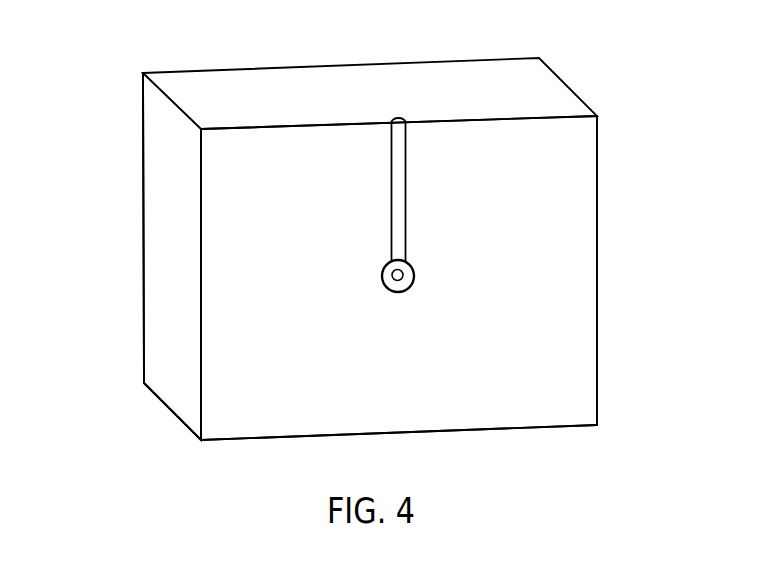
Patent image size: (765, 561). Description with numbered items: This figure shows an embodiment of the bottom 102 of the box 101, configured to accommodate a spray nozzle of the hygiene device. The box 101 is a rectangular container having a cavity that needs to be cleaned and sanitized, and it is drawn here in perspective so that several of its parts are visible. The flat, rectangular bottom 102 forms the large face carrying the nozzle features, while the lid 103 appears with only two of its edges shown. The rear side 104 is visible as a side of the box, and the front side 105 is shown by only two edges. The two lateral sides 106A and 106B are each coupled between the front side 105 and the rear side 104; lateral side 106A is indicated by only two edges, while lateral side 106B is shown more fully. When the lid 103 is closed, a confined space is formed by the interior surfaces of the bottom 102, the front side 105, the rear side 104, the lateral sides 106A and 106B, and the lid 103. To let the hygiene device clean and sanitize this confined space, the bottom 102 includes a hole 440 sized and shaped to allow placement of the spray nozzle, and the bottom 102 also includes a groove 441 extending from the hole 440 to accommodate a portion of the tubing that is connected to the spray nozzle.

The box 101 is at (342, 65).
The bottom 102 is at (555, 308).
The lid 103 is at (143, 171).
The rear side 104 is at (543, 92).
The front side 105 is at (462, 430).
The lateral side 106A is at (597, 210).
The lateral side 106B is at (173, 275).
The hole 440 is at (403, 274).
The groove 441 is at (398, 192).